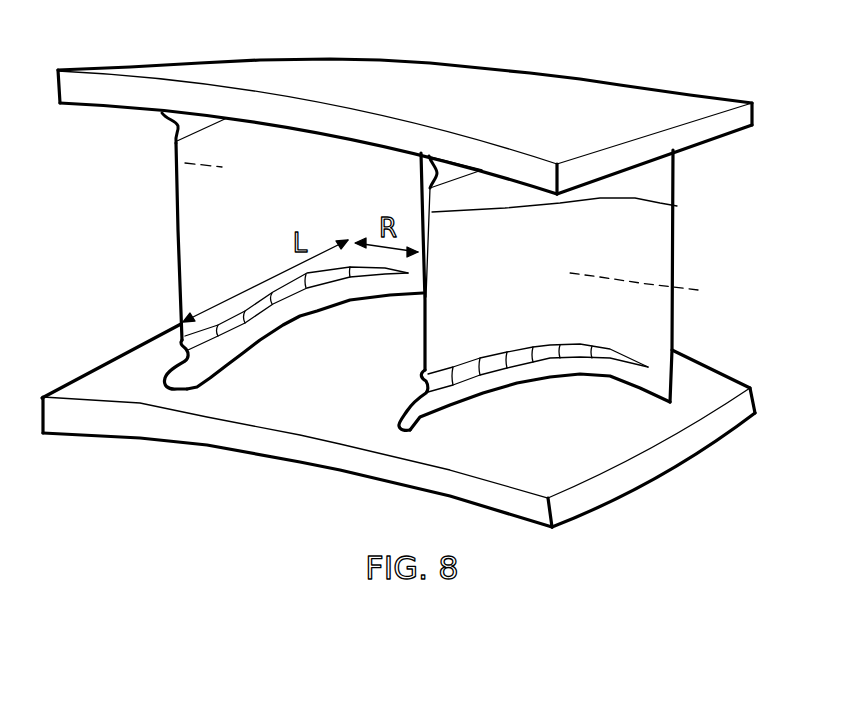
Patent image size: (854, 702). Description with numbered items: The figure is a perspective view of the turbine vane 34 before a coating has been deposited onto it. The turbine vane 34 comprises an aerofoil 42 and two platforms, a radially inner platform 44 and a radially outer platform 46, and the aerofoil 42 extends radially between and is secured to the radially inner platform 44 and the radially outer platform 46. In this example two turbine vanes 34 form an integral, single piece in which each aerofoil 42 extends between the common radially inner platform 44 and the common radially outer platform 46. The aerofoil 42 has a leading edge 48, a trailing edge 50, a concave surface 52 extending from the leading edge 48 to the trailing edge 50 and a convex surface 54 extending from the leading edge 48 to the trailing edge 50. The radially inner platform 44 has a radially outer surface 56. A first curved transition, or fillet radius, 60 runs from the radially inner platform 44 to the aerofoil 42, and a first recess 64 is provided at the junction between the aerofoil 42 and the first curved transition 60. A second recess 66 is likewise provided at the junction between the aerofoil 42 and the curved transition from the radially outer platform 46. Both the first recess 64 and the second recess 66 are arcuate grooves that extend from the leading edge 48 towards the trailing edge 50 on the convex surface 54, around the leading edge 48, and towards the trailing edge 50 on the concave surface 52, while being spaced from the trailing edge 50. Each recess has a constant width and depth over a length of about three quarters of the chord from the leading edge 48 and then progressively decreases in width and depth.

The turbine vane 34 is at (203, 245).
The aerofoil 42 is at (203, 181).
The radially inner platform 44 is at (267, 408).
The radially outer platform 46 is at (360, 127).
The leading edge 48 is at (180, 273).
The trailing edge 50 is at (677, 206).
The concave surface 52 is at (262, 250).
The convex surface 54 is at (177, 160).
The radially outer surface 56 is at (570, 487).
The first curved transition 60 is at (258, 328).
The first recess 64 is at (203, 343).
The second recess 66 is at (190, 122).